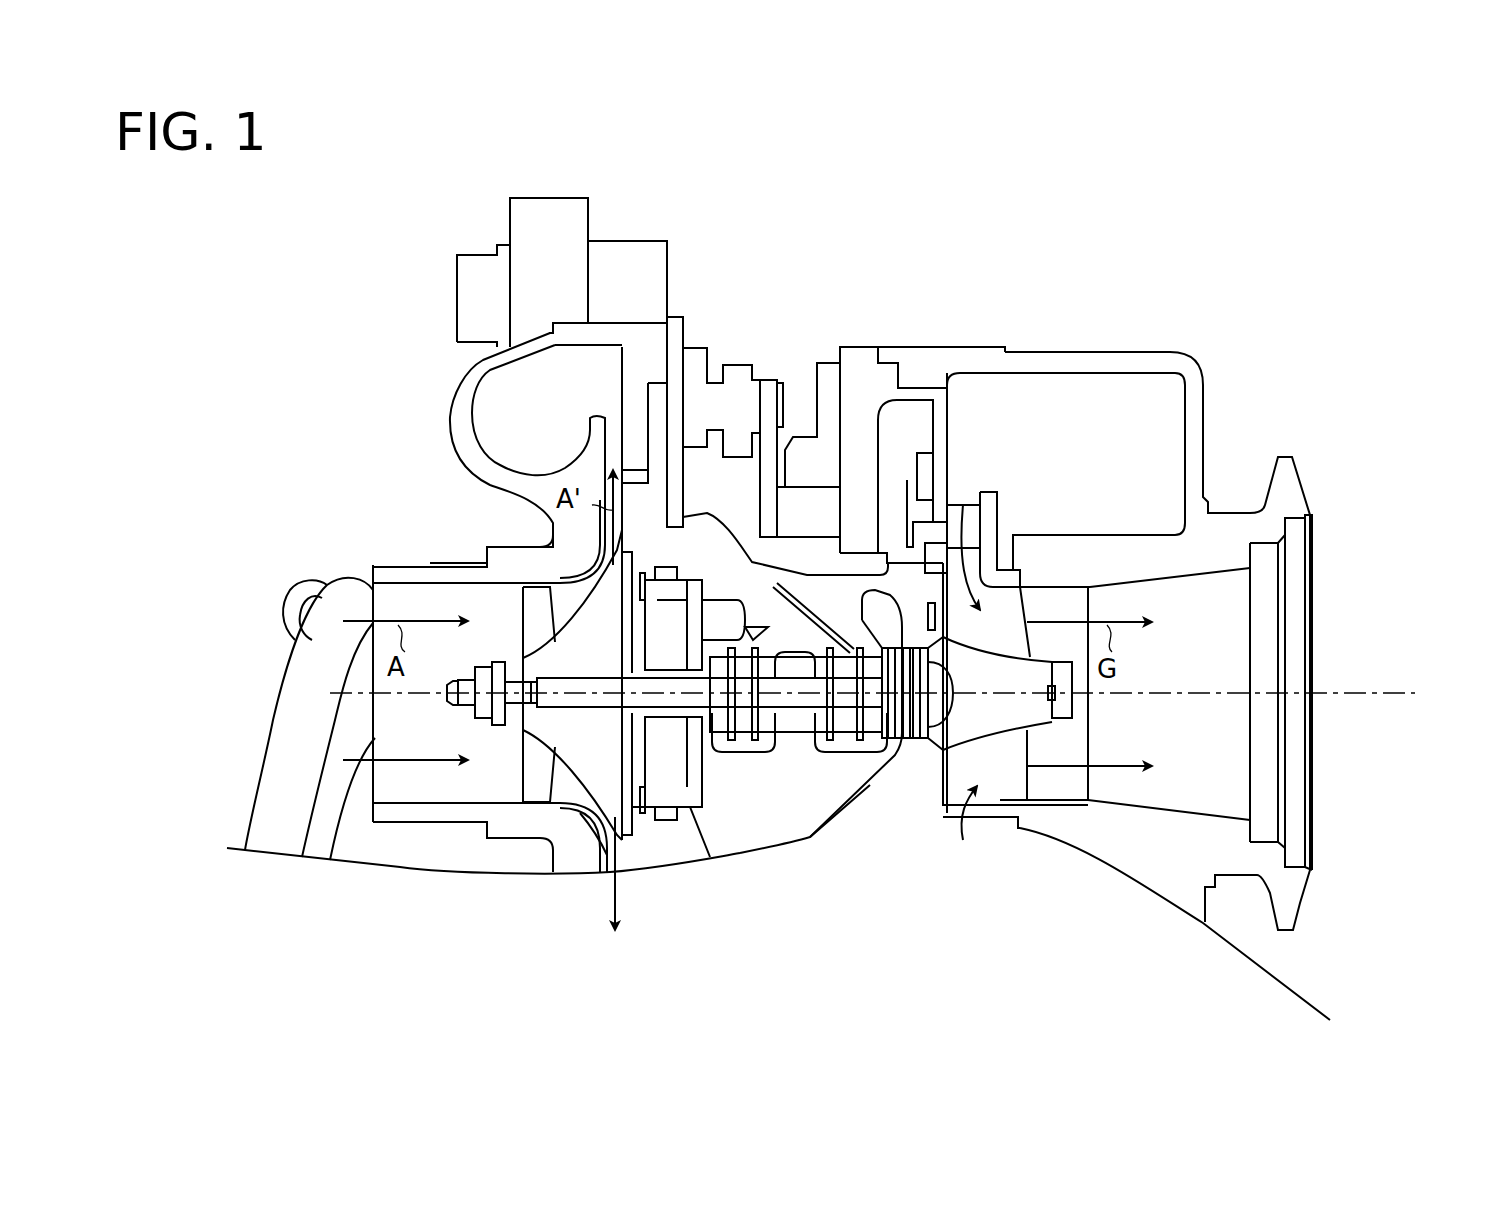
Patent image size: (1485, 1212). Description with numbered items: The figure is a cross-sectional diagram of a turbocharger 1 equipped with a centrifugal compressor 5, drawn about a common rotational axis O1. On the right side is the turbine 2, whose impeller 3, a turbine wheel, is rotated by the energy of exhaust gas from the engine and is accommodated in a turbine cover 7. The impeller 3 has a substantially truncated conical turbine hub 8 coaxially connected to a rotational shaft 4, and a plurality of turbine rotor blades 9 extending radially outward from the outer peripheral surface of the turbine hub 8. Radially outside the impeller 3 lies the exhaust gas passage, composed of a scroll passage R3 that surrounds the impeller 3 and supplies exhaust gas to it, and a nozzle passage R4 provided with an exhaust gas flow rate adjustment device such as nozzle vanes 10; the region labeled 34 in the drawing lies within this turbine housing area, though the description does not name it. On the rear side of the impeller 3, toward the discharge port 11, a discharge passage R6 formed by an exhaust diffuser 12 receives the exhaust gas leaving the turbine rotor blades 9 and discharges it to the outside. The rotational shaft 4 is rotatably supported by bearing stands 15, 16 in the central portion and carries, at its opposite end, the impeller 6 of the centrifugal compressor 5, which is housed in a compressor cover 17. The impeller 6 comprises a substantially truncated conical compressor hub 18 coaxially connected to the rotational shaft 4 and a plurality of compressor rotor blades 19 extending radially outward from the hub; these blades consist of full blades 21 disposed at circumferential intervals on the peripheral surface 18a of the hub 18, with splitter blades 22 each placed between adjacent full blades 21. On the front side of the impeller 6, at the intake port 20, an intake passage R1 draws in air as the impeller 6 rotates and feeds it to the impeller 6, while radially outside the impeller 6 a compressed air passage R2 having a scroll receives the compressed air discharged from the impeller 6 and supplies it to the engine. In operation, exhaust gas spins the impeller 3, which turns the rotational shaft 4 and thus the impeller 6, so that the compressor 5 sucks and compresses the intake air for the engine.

The turbocharger 1 is at (1313, 190).
The turbine 2 is at (1128, 634).
The impeller (turbine wheel) 3 is at (1182, 729).
The rotational shaft 4 is at (860, 700).
The centrifugal compressor 5 is at (451, 393).
The impeller (compressor wheel) 6 is at (489, 693).
The turbine cover (turbine housing) 7 is at (1084, 352).
The turbine hub 8 is at (1040, 725).
The turbine rotor blades 9 is at (1000, 770).
The nozzle vanes 10 is at (975, 525).
The discharge port 11 is at (1313, 675).
The exhaust diffuser 12 is at (1207, 566).
The bearing stand 15 is at (745, 745).
The bearing stand 16 is at (850, 745).
The compressor cover 17 is at (461, 562).
The compressor hub (hub) 18 is at (537, 742).
The peripheral surface of the hub 18a is at (580, 815).
The compressor rotor blades 19 is at (349, 721).
The intake port 20 is at (365, 657).
The full blades 21 is at (538, 780).
The splitter blades 22 is at (563, 797).
The scroll passage 34 is at (985, 520).
The intake passage R1 is at (441, 605).
The compressed air passage R2 is at (551, 392).
The scroll passage R3 is at (1152, 440).
The nozzle passage R4 is at (963, 500).
The discharge passage R6 is at (1225, 625).
The axis (rotational axis) O1 is at (896, 693).